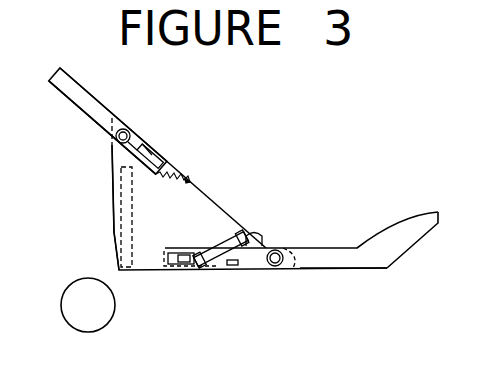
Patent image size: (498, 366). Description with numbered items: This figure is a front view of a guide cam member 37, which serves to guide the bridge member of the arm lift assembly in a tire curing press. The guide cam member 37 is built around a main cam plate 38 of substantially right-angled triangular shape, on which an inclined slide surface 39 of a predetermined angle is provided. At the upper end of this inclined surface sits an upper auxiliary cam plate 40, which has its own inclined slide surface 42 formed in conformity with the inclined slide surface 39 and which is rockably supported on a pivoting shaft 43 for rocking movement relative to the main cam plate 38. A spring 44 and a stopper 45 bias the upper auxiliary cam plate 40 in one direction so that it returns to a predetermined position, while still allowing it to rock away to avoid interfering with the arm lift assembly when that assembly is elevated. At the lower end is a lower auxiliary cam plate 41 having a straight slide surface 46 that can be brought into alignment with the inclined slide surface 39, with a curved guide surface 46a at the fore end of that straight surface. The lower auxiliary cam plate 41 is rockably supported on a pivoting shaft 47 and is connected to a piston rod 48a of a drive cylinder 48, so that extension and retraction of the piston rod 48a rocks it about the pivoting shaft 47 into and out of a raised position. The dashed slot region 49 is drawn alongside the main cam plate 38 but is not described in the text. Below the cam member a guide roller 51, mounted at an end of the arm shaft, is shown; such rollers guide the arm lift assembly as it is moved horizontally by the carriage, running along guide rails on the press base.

The guide cam member 37 is at (120, 233).
The main cam plate 38 is at (200, 227).
The inclined slide surface 39 is at (224, 204).
The upper auxiliary cam plate 40 is at (90, 118).
The lower auxiliary cam plate 41 is at (357, 268).
The inclined slide surface 42 is at (100, 102).
The pivoting shaft 43 is at (117, 147).
The spring 44 is at (183, 168).
The stopper 45 is at (160, 157).
The straight slide surface 46 is at (320, 247).
The curved guide surface 46a is at (408, 232).
The pivoting shaft 47 is at (284, 268).
The drive cylinder 48 is at (217, 260).
The piston rod 48a is at (241, 253).
The slot 49 is at (112, 211).
The guide roller 51 is at (115, 316).